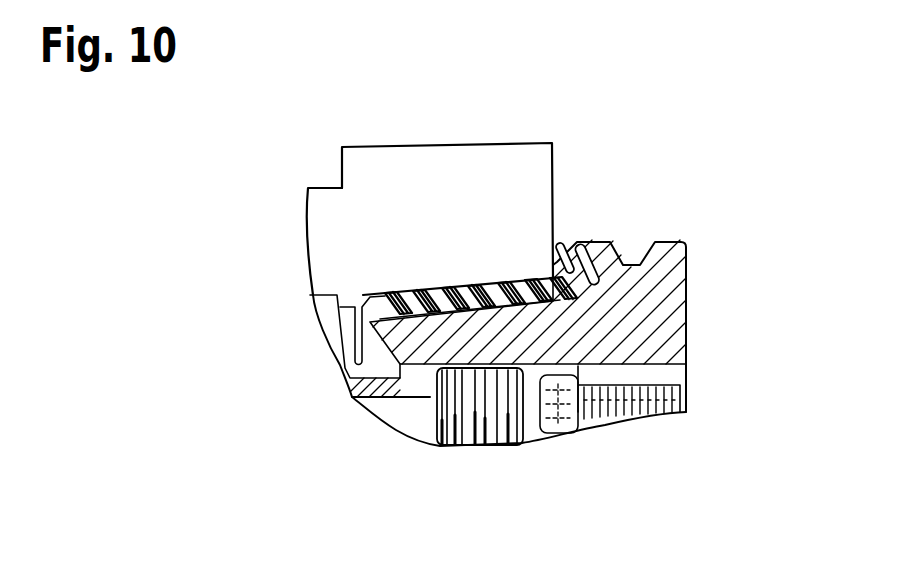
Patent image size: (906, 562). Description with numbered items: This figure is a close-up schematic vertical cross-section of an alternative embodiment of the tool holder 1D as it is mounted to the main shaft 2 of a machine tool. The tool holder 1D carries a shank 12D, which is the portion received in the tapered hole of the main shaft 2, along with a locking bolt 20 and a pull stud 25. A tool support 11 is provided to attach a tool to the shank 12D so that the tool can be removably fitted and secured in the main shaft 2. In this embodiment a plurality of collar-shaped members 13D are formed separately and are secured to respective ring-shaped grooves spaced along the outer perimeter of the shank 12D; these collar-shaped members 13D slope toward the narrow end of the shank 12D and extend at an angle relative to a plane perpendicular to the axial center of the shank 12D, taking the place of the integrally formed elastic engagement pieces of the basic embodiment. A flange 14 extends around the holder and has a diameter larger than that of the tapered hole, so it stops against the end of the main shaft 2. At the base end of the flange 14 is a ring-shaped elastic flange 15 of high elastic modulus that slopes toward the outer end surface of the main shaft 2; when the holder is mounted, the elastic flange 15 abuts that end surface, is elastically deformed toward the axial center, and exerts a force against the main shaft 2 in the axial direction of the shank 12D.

The main shaft 2 is at (418, 145).
The tool holder 1D is at (719, 187).
The tool support 11 is at (680, 328).
The shank 12D is at (478, 370).
The collar-shaped members 13D is at (384, 294).
The flange 14 is at (685, 241).
The elastic flange 15 is at (560, 243).
The locking bolt 20 is at (655, 413).
The pull stud 25 is at (397, 391).